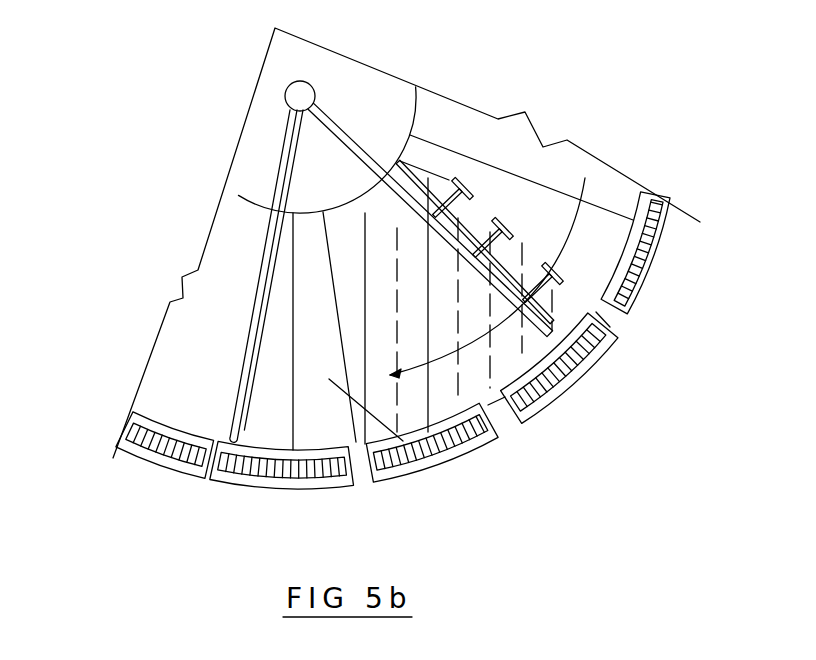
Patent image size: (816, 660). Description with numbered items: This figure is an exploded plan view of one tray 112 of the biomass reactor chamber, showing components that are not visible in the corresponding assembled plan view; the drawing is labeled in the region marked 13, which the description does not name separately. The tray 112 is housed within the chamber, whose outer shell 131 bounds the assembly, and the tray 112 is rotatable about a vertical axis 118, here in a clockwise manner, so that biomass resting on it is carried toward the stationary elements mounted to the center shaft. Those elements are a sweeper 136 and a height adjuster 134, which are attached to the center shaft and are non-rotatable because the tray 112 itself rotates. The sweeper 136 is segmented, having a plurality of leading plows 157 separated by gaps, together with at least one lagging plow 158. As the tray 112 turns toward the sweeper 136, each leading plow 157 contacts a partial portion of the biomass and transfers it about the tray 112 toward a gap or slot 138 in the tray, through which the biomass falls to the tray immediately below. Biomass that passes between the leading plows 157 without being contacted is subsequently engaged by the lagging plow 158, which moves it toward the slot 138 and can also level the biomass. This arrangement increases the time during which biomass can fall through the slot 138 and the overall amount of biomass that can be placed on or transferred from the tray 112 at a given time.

The display device 13 is at (213, 410).
The tray 112 is at (183, 388).
The vertical axis 118 is at (512, 420).
The outer shell 131 is at (627, 317).
The height adjuster 134 is at (250, 383).
The sweeper 136 is at (455, 192).
The slot 138 is at (437, 440).
The leading plow 157 is at (573, 140).
The lagging plow 158 is at (560, 251).